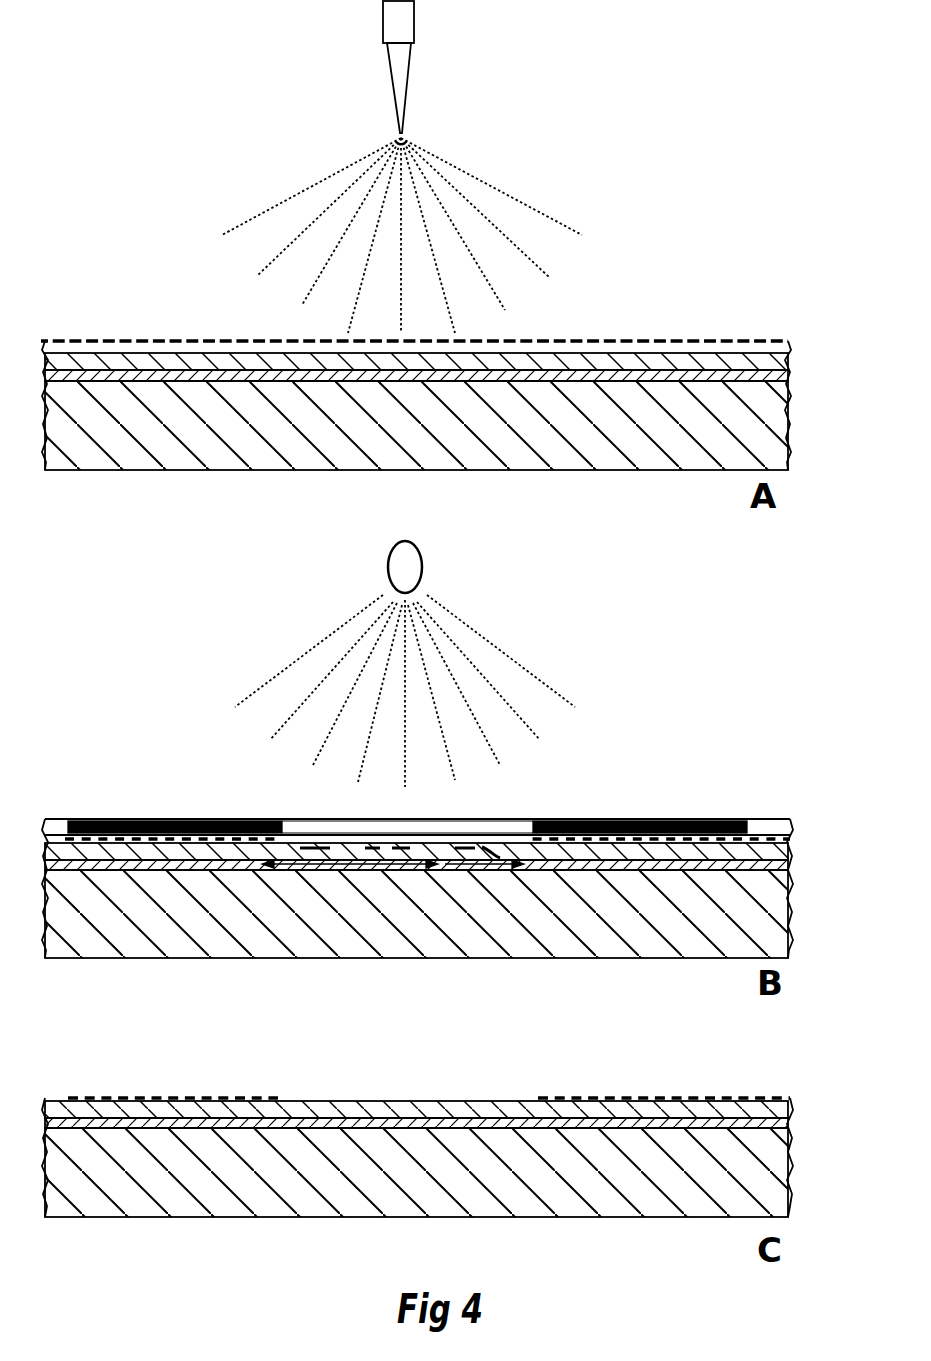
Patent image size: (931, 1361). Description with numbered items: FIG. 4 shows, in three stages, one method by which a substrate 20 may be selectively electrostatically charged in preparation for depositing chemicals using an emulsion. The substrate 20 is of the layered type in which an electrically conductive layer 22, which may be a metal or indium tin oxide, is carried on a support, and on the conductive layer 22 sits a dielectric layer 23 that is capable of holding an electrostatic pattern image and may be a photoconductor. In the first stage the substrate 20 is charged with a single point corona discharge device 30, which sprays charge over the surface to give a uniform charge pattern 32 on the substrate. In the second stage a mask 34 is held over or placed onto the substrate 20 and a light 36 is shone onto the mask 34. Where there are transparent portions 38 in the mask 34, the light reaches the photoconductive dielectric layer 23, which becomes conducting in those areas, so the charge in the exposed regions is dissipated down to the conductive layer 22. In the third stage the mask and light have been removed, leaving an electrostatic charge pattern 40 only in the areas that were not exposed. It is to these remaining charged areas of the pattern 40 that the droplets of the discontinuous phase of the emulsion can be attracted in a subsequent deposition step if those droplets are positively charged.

The substrate 20 is at (152, 473).
The electrically conductive layer 22 is at (795, 863).
The dielectric layer 23 is at (797, 847).
The single point corona discharge device 30 is at (399, 62).
The uniform charge pattern 32 is at (118, 340).
The mask 34 is at (135, 820).
The light 36 is at (412, 567).
The transparent portions 38 is at (318, 826).
The electrostatic charge pattern 40 is at (134, 1097).